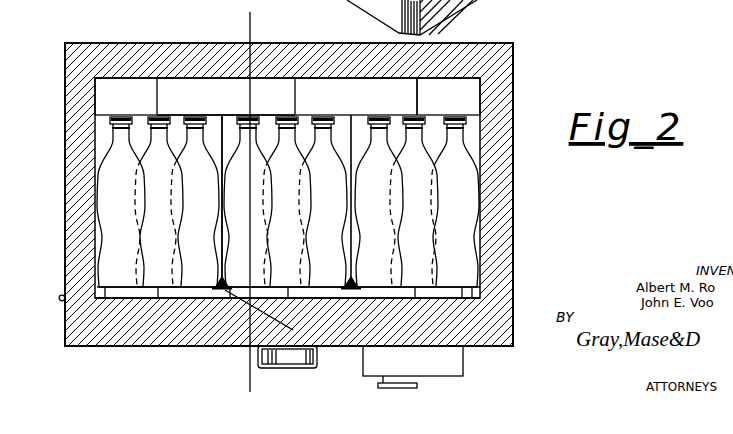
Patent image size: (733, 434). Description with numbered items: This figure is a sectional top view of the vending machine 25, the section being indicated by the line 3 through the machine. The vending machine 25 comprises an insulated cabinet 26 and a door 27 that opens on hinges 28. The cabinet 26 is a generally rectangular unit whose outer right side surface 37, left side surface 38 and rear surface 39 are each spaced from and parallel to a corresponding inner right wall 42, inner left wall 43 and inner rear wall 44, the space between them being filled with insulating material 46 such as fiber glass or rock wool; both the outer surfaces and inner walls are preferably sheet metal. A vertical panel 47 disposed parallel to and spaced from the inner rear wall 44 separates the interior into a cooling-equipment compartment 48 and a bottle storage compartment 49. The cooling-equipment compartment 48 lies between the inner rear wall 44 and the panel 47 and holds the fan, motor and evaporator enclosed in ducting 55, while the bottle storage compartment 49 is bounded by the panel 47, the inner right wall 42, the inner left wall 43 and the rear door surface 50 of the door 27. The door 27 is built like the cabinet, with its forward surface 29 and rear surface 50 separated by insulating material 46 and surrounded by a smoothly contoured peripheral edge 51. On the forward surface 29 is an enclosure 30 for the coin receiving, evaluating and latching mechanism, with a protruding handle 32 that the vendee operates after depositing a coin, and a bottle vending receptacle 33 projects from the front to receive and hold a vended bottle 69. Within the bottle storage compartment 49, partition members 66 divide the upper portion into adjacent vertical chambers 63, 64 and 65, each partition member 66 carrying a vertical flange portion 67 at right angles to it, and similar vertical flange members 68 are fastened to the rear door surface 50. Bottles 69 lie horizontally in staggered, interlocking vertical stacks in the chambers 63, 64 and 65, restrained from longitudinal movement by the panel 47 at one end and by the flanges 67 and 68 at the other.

The line 3— 3 is at (253, 28).
The vending machine 25 is at (527, 263).
The cabinet 26 is at (520, 192).
The door 27 is at (147, 347).
The hinges 28 is at (62, 294).
The forward surface 29 is at (195, 346).
The enclosure 30 is at (465, 375).
The protruding handle 32 is at (417, 386).
The bottle vending receptacle 33 is at (315, 365).
The right side surface 37 is at (512, 220).
The left side surface 38 is at (66, 157).
The rear surface 39 is at (140, 43).
The inner right wall 42 is at (480, 195).
The inner left wall 43 is at (95, 136).
The inner rear wall 44 is at (287, 96).
The insulating material 46 is at (500, 62).
The vertical panel 47 is at (128, 117).
The cooling-equipment compartment 48 is at (462, 95).
The bottle storage compartment 49 is at (430, 162).
The rear door surface 50 is at (130, 298).
The edge 51 is at (65, 328).
The ducting 55 is at (202, 90).
The vertical chamber 63 is at (175, 115).
The vertical chamber 64 is at (232, 138).
The vertical chamber 65 is at (378, 117).
The partition member 66 is at (223, 170).
The vertical flange portion 67 is at (362, 289).
The vertical flange member 68 is at (288, 285).
The bottle 69 is at (380, 118).